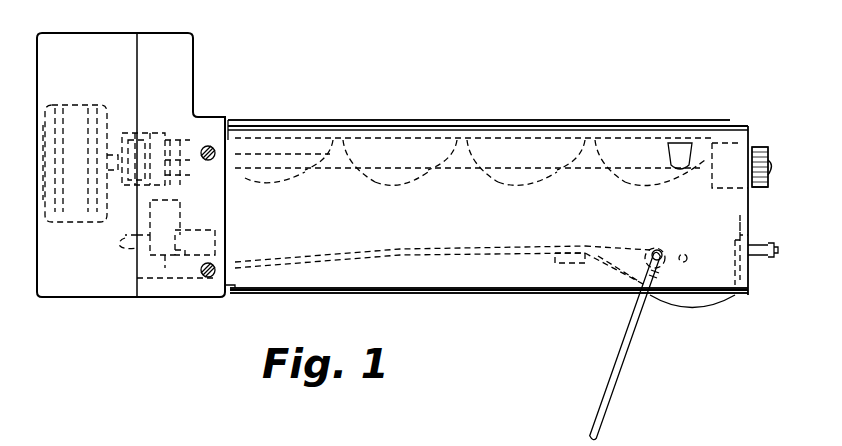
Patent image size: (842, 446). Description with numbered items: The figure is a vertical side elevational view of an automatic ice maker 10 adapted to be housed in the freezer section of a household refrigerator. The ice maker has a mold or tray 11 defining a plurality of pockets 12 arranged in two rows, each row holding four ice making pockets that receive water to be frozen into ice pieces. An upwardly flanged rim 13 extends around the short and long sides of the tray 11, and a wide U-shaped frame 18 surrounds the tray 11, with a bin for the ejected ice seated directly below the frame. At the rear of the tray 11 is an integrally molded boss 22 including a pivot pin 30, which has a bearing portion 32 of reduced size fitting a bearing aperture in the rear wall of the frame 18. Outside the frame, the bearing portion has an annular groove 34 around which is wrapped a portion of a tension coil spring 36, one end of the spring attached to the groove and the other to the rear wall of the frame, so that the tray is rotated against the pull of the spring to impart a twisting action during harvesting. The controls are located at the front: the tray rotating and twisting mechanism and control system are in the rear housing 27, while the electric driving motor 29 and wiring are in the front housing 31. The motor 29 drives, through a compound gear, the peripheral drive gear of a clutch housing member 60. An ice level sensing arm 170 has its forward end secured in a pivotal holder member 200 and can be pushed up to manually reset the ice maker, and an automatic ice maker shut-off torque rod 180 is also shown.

The ice maker 10 is at (351, 107).
The tray 11 is at (616, 110).
The pockets 12 is at (455, 183).
The upwardly flanged rim 13 is at (543, 124).
The U-shaped frame 18 is at (447, 298).
The boss 22 is at (738, 192).
The rear housing 27 is at (153, 33).
The electric driving motor 29 is at (82, 104).
The pivot pin 30 is at (772, 170).
The front housing 31 is at (70, 33).
The bearing portion 32 is at (757, 147).
The annular groove 34 is at (768, 152).
The tension coil spring 36 is at (762, 186).
The clutch housing member 60 is at (156, 131).
The ice level sensing arm 170 is at (335, 264).
The automatic ice maker shut-off torque rod 180 is at (624, 364).
The pivotal holder member 200 is at (164, 262).